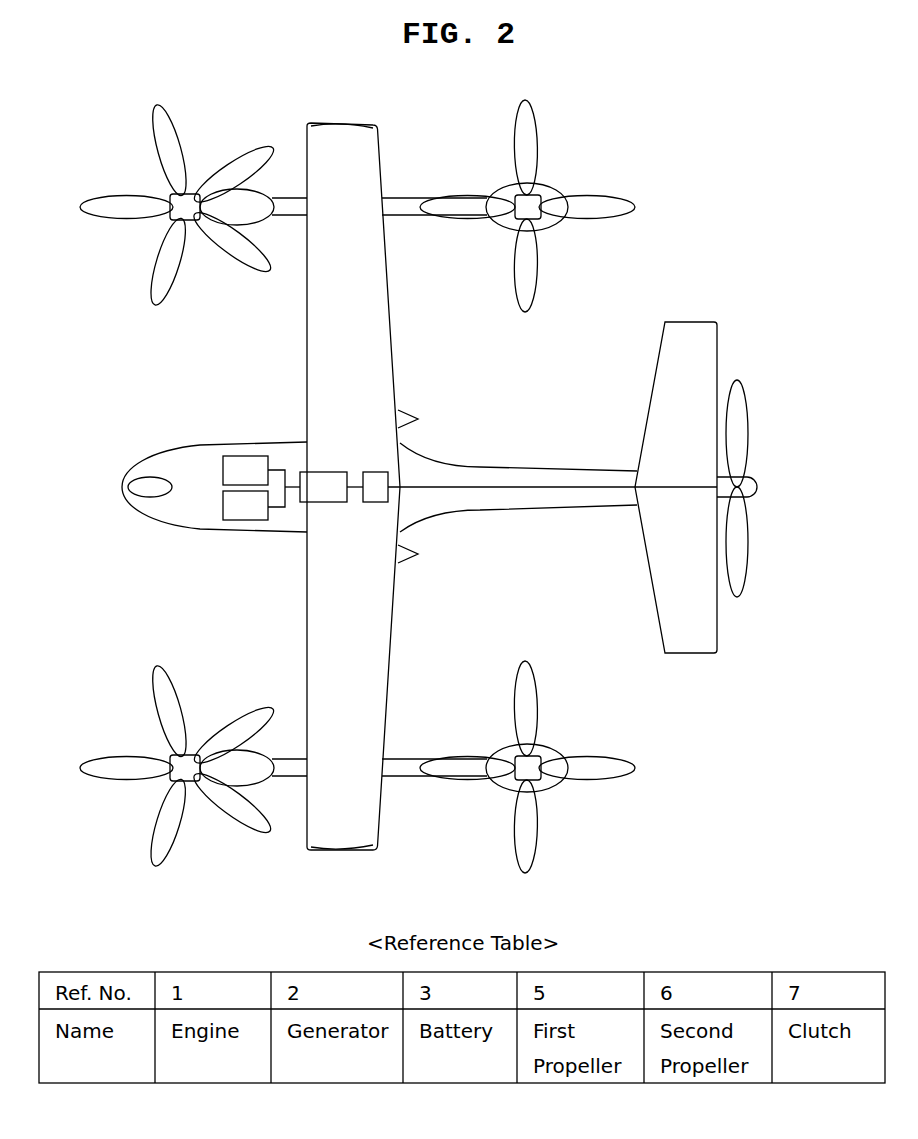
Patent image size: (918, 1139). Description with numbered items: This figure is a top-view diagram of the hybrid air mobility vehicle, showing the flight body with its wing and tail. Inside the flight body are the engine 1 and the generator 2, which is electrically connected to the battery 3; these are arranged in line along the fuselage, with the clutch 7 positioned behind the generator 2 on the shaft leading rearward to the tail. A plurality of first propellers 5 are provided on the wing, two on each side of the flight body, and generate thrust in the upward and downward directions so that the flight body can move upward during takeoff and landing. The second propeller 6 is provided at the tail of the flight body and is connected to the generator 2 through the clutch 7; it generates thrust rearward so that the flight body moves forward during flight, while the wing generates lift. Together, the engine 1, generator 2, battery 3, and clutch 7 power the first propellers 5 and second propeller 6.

The engine 1 is at (230, 518).
The generator 2 is at (326, 493).
The battery 3 is at (226, 458).
The first propeller 5 is at (172, 194).
The second propeller 6 is at (738, 532).
The clutch 7 is at (385, 476).